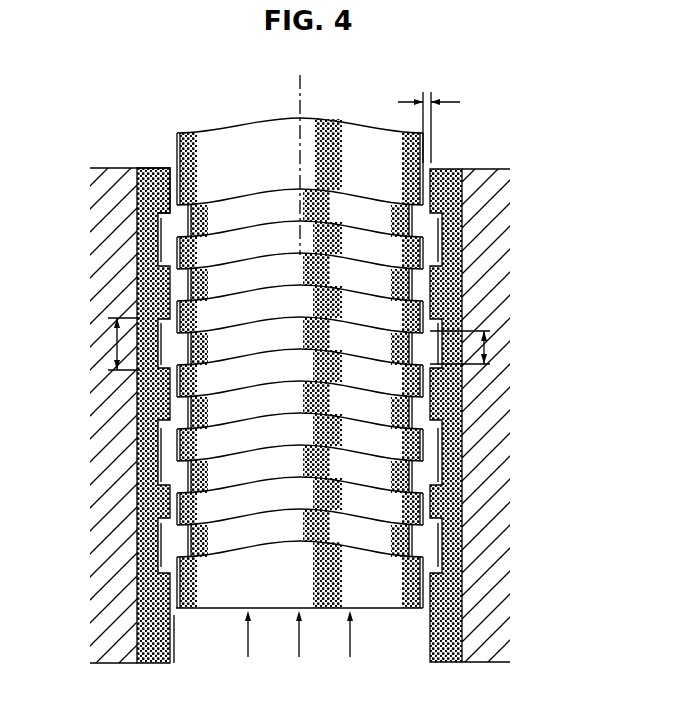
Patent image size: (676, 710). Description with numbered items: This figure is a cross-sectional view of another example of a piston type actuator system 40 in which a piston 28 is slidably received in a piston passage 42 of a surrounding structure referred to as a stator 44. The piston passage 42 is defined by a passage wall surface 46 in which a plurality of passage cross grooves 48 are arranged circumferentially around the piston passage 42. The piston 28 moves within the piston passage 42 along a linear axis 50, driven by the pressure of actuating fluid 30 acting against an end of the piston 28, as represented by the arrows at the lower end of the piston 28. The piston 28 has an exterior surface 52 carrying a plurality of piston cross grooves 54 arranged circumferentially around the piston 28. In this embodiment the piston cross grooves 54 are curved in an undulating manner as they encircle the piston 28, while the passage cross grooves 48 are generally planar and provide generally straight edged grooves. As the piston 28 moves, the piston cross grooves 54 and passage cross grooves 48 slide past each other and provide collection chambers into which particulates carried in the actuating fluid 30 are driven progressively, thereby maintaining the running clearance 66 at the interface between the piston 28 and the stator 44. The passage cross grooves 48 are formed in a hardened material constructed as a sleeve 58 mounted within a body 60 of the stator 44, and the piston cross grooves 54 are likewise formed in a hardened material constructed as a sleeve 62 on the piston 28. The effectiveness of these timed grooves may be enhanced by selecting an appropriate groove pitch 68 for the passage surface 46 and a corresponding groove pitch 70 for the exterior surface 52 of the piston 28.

The piston 28 is at (247, 122).
The actuating fluid 30 is at (248, 642).
The actuator system 40 is at (136, 129).
The piston passage 42 is at (207, 667).
The stator 44 is at (496, 389).
The passage wall surface 46 is at (168, 428).
The passage cross grooves 48 is at (103, 415).
The linear axis 50 is at (300, 98).
The exterior surface 52 is at (412, 472).
The piston cross grooves 54 is at (420, 219).
The sleeve 58 is at (150, 214).
The body 60 is at (475, 563).
The sleeve 62 is at (463, 447).
The running clearance 66 is at (445, 125).
The groove pitch 68 is at (116, 344).
The groove pitch 70 is at (490, 350).